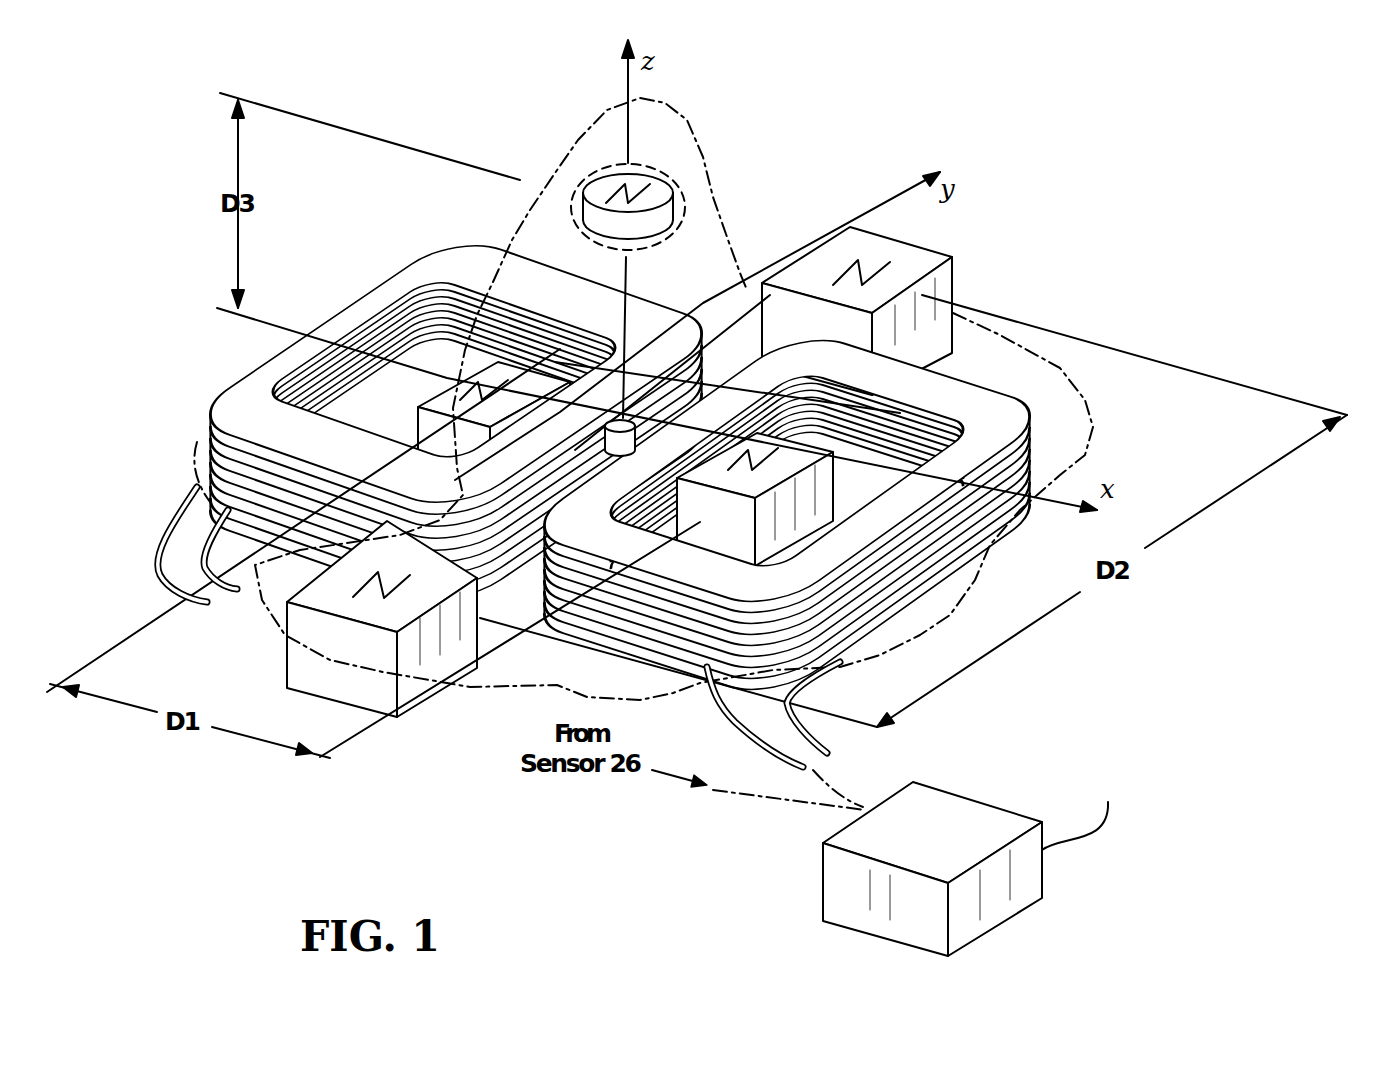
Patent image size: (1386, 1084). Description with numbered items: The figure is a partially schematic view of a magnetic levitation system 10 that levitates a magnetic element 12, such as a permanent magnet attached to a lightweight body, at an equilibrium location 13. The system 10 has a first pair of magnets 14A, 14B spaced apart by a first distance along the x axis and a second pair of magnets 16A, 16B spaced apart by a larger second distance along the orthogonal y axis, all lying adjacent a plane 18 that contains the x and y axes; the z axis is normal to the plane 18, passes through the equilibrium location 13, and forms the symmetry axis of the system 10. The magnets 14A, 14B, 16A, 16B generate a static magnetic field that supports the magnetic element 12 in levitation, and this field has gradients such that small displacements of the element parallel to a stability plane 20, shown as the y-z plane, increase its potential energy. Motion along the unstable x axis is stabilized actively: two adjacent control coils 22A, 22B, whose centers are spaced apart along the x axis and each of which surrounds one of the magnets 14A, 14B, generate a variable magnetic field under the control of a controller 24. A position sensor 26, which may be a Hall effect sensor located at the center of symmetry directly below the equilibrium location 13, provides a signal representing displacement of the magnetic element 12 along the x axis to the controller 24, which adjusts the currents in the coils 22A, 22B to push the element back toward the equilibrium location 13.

The magnetic levitation system 10 is at (396, 245).
The magnetic element 12 is at (668, 185).
The equilibrium location 13 is at (684, 204).
The magnet of first pair 14A is at (1043, 424).
The magnet of first pair 14B is at (302, 364).
The magnet of second pair 16A is at (427, 704).
The magnet of second pair 16B is at (920, 253).
The plane 18 is at (652, 682).
The stability plane 20 is at (670, 127).
The control coil 22A is at (847, 514).
The control coil 22B is at (409, 422).
The controller 24 is at (823, 875).
The position sensor 26 is at (617, 452).